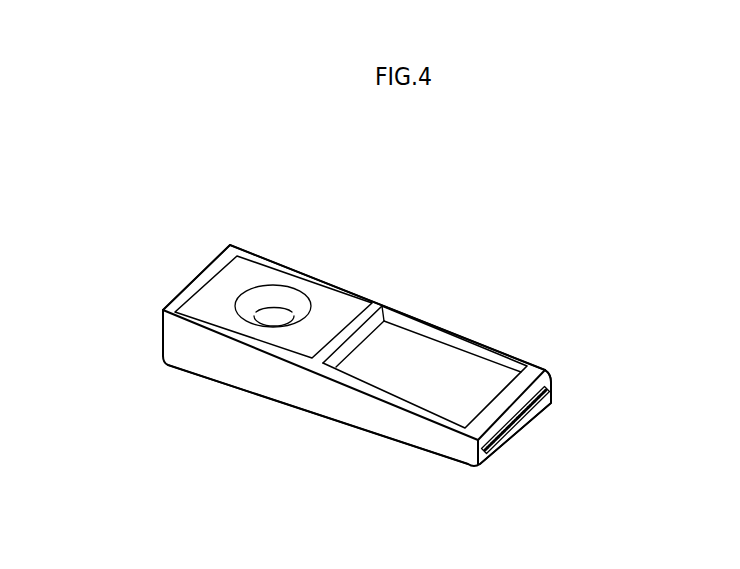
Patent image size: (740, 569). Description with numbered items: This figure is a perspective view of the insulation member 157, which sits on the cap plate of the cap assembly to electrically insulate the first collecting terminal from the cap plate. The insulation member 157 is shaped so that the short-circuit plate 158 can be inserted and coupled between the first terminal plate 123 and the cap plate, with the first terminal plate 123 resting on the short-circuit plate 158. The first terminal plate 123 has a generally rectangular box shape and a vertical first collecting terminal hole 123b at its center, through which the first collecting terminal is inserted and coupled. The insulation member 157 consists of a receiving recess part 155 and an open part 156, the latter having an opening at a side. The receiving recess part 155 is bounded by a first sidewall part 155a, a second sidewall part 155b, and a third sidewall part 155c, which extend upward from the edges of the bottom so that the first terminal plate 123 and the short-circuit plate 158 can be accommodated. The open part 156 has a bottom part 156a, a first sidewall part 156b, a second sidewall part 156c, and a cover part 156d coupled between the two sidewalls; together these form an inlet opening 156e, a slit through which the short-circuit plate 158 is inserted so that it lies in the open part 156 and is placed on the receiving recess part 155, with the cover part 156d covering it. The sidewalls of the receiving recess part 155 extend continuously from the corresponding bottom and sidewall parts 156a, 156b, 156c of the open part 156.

The insulation member 157 is at (176, 194).
The receiving recess part 155 is at (96, 219).
The first sidewall part 155a is at (184, 337).
The second sidewall part 155b is at (260, 250).
The third sidewall part 155c is at (207, 290).
The first terminal plate 123 is at (340, 290).
The first collecting terminal hole 123b is at (278, 298).
The open part 156 is at (690, 338).
The first sidewall part 156b is at (383, 393).
The second sidewall part 156c is at (463, 336).
The cover part 156d is at (478, 370).
The inlet opening 156e is at (547, 365).
The bottom part 156a is at (556, 416).
The short-circuit plate 158 is at (519, 425).